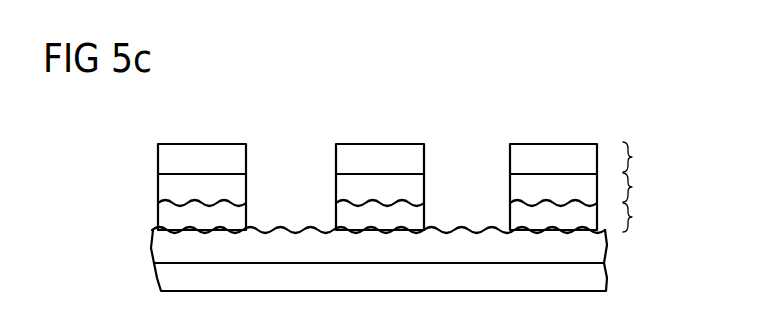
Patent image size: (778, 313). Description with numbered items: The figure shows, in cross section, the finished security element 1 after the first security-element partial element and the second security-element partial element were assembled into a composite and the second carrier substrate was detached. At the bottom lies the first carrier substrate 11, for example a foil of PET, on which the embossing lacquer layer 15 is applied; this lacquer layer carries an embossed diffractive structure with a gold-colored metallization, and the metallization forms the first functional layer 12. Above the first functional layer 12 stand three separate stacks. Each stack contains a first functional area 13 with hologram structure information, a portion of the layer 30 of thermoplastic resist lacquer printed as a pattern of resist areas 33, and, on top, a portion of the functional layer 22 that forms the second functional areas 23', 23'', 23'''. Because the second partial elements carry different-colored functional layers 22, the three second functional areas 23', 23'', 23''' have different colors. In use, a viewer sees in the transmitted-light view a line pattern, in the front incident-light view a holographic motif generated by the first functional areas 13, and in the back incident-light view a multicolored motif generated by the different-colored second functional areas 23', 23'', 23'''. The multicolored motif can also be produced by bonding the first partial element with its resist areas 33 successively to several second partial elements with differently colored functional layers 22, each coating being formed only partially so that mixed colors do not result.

The security element 1 is at (618, 110).
The first carrier substrate 11 is at (593, 272).
The first functional layer 12 is at (643, 217).
The first functional areas 13 is at (170, 222).
The embossing lacquer layer 15 is at (593, 241).
The functional layer 22 is at (643, 157).
The second functional area 23' is at (202, 160).
The second functional area 23'' is at (380, 160).
The second functional area 23''' is at (553, 160).
The layer of thermoplastic resist lacquer 30 is at (643, 187).
The resist areas 33 is at (170, 190).